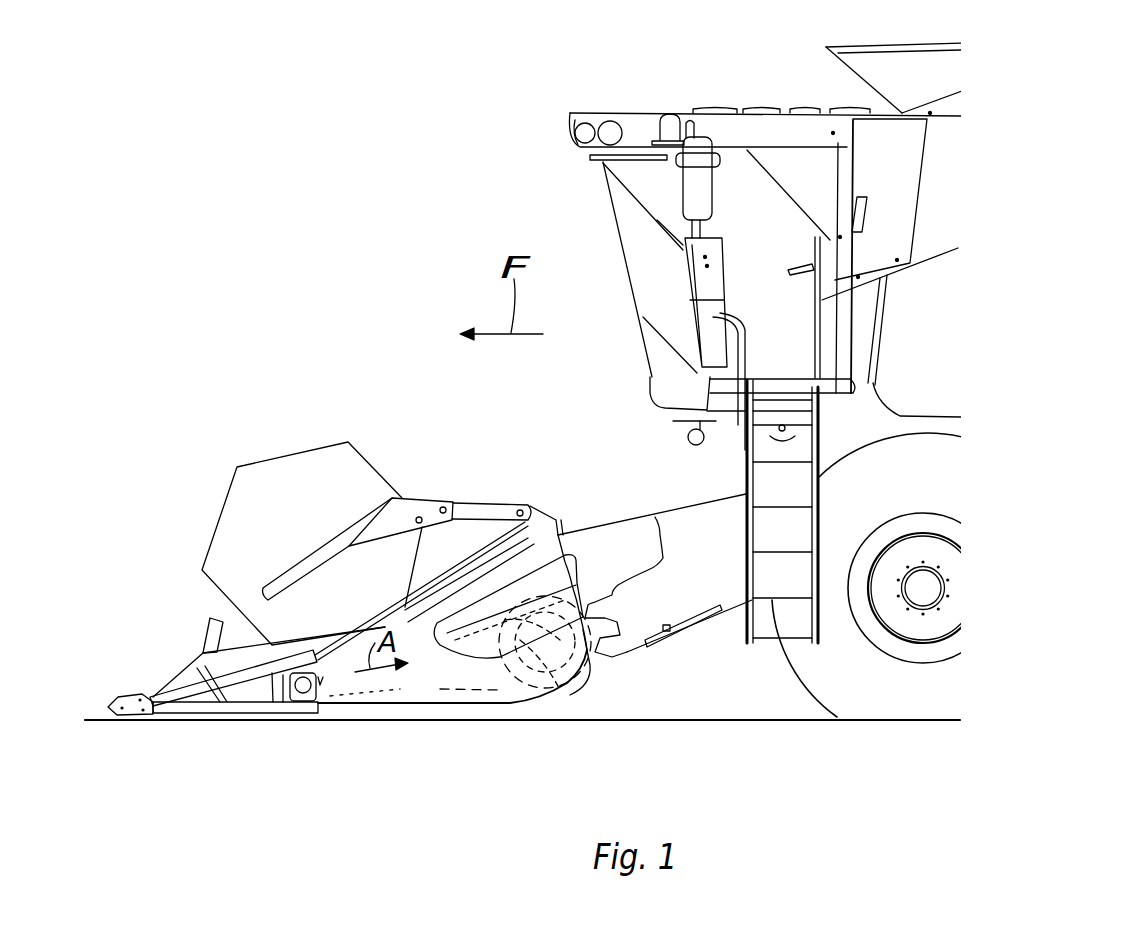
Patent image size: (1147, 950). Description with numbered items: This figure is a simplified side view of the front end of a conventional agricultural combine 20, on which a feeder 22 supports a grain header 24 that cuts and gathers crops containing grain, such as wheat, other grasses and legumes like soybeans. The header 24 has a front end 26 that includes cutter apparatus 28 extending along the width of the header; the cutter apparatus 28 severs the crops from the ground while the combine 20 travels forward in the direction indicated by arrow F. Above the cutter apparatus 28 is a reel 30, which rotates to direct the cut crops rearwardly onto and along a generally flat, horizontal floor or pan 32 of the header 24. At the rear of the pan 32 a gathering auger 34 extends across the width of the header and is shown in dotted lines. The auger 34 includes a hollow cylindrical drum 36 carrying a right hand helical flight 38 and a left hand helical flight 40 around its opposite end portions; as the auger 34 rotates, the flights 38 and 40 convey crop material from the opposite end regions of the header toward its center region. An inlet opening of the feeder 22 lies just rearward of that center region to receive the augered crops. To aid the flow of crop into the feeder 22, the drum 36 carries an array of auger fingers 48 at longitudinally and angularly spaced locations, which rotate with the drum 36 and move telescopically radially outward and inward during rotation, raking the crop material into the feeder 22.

The agricultural combine 20 is at (1082, 127).
The feeder 22 is at (627, 512).
The grain header 24 is at (600, 673).
The front end 26 is at (372, 705).
The cutter apparatus 28 is at (340, 705).
The reel 30 is at (348, 440).
The floor or pan 32 is at (397, 689).
The gathering auger 34 is at (536, 660).
The drum 36 is at (533, 647).
The right hand helical flight 38 is at (503, 683).
The left hand helical flight 40 is at (545, 642).
The auger fingers 48 is at (443, 623).